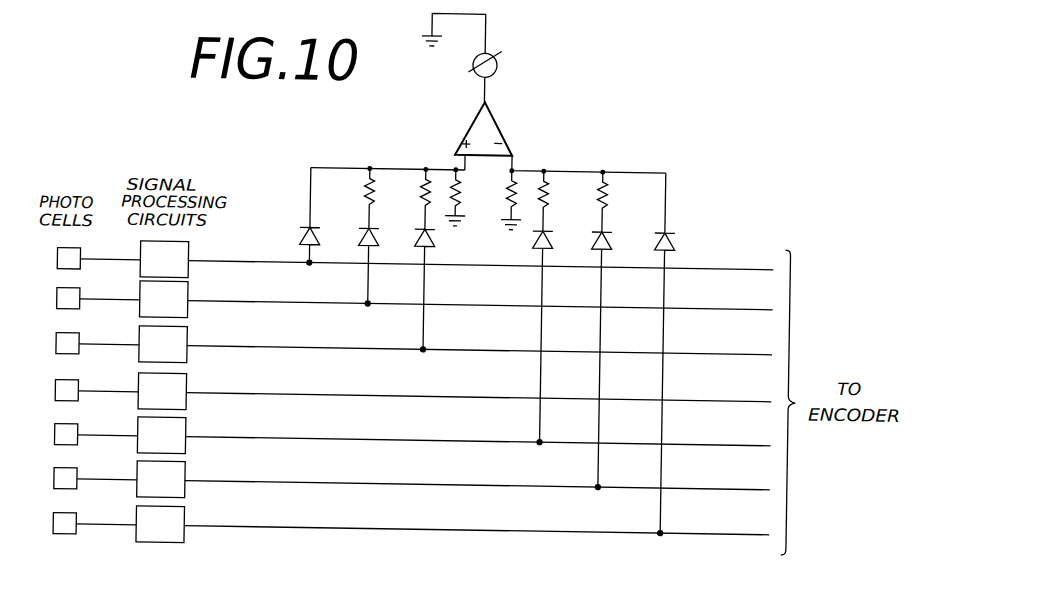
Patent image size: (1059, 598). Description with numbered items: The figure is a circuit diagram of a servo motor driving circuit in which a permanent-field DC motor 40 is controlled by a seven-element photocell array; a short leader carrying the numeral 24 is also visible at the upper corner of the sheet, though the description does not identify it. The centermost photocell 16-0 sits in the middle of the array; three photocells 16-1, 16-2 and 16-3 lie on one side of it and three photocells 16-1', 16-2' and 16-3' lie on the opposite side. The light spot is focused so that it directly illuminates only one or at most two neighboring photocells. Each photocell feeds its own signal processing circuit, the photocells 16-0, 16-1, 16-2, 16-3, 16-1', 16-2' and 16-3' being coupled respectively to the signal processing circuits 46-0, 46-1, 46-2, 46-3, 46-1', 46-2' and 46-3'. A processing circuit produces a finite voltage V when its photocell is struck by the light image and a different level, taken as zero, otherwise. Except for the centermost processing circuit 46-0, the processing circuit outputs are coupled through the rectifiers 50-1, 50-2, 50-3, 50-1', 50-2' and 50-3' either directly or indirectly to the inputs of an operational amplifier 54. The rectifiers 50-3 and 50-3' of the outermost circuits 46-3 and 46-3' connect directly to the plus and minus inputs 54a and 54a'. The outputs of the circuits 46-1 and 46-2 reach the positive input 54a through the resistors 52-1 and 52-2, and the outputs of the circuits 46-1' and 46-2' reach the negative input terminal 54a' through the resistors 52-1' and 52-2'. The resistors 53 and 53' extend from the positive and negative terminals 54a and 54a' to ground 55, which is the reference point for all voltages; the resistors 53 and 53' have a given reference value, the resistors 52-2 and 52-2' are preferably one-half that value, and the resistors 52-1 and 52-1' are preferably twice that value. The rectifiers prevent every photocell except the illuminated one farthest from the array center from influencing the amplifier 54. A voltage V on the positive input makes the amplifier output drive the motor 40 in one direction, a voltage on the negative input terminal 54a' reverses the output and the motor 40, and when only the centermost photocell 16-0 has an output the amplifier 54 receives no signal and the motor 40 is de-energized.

The photocell 16-3 is at (99, 250).
The photocell 16-2 is at (99, 292).
The photocell 16-1 is at (98, 337).
The centermost photocell 16-0 is at (87, 384).
The photocell 16-1' is at (96, 428).
The photocell 16-2' is at (96, 472).
The photocell 16-3' is at (95, 517).
The signal processing circuit 46-3 is at (457, 261).
The signal processing circuit 46-2 is at (456, 301).
The signal processing circuit 46-1 is at (456, 346).
The centermost signal processing circuit 46-0 is at (198, 379).
The signal processing circuit 46-1' is at (454, 437).
The signal processing circuit 46-2' is at (454, 481).
The signal processing circuit 46-3' is at (453, 526).
The rectifier 50-3 is at (292, 216).
The rectifier 50-2 is at (348, 256).
The rectifier 50-1 is at (405, 279).
The rectifier 50-1' is at (560, 329).
The rectifier 50-2' is at (623, 353).
The rectifier 50-3' is at (688, 355).
The resistor 52-2 is at (346, 198).
The resistor 52-1 is at (405, 199).
The resistor 52-1' is at (567, 201).
The resistor 52-2' is at (629, 202).
The resistor 53 is at (468, 193).
The resistor 53' is at (496, 195).
The ground 55 is at (509, 232).
The operational amplifier 54 is at (490, 118).
The positive input 54a is at (388, 156).
The negative input terminal 54a' is at (589, 157).
The permanent-field DC motor 40 is at (494, 67).
The code member 24 is at (745, 0).